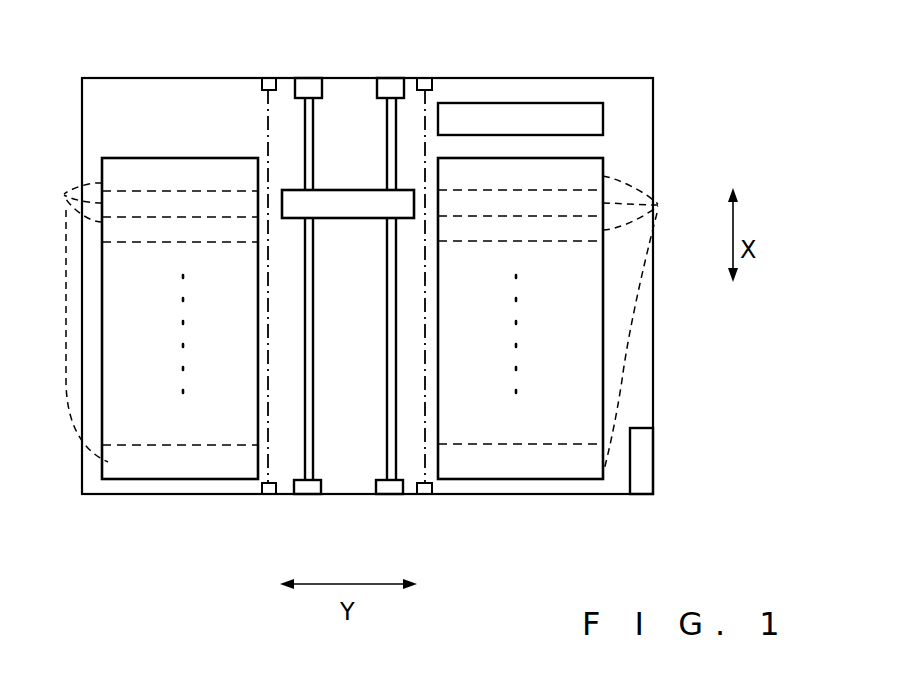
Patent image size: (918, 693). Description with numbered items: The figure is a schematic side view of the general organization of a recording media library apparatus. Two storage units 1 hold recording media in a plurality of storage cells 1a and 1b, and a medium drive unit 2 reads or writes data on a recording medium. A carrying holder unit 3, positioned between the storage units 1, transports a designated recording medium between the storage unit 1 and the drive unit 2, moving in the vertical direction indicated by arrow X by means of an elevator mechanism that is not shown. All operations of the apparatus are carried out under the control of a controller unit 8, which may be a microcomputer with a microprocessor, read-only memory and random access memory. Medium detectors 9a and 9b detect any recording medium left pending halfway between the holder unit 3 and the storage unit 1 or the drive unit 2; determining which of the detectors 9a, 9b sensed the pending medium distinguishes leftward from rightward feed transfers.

The storage unit 1 is at (90, 479).
The storage cell 1a is at (63, 321).
The storage cell 1b is at (653, 323).
The medium drive unit 2 is at (600, 119).
The carrying holder unit 3 is at (340, 210).
The controller unit 8 is at (645, 452).
The medium detector 9a is at (268, 78).
The medium detector 9b is at (425, 78).